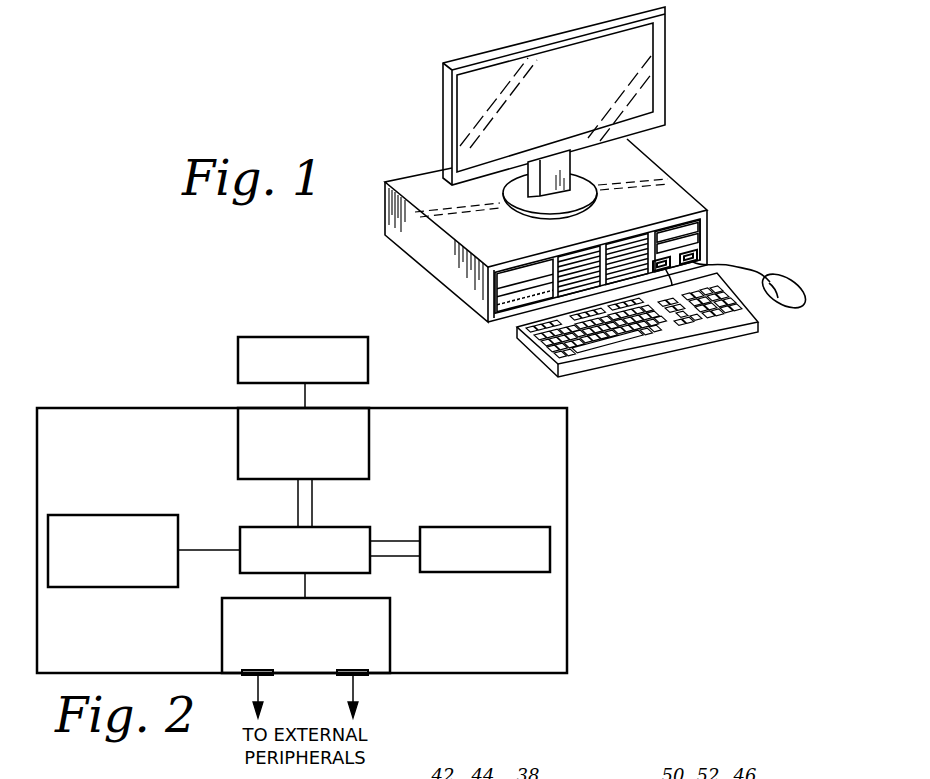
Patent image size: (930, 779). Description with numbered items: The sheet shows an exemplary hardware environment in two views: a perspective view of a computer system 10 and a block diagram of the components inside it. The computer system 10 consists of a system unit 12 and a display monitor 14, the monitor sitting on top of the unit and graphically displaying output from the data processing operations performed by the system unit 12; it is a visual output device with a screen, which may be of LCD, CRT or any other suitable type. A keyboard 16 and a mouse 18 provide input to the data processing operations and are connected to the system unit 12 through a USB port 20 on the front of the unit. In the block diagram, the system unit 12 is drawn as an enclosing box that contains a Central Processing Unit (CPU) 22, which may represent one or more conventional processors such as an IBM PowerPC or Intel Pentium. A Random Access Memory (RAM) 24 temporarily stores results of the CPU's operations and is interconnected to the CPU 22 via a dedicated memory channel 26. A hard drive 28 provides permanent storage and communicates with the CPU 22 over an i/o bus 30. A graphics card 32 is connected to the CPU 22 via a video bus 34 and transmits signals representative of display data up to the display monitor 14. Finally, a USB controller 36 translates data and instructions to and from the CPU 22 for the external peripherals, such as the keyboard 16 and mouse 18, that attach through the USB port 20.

In FIG. 1, the computer system 10 is at (378, 100).
In FIG. 1, the system unit 12 is at (510, 244).
In FIG. 2, the system unit 12 is at (567, 447).
In FIG. 1, the display monitor 14 is at (574, 107).
In FIG. 2, the display monitor 14 is at (368, 357).
In FIG. 1, the keyboard 16 is at (718, 333).
In FIG. 1, the mouse 18 is at (795, 283).
In FIG. 1, the USB port 20 is at (688, 248).
In FIG. 2, the USB port 20 is at (270, 675).
In FIG. 2, the Central Processing Unit (CPU) 22 is at (262, 526).
In FIG. 2, the Random Access Memory (RAM) 24 is at (487, 526).
In FIG. 2, the dedicated memory channel 26 is at (395, 557).
In FIG. 2, the hard drive 28 is at (115, 514).
In FIG. 2, the i/o bus 30 is at (195, 551).
In FIG. 2, the graphics card 32 is at (369, 445).
In FIG. 2, the video bus 34 is at (312, 500).
In FIG. 2, the USB controller 36 is at (390, 633).